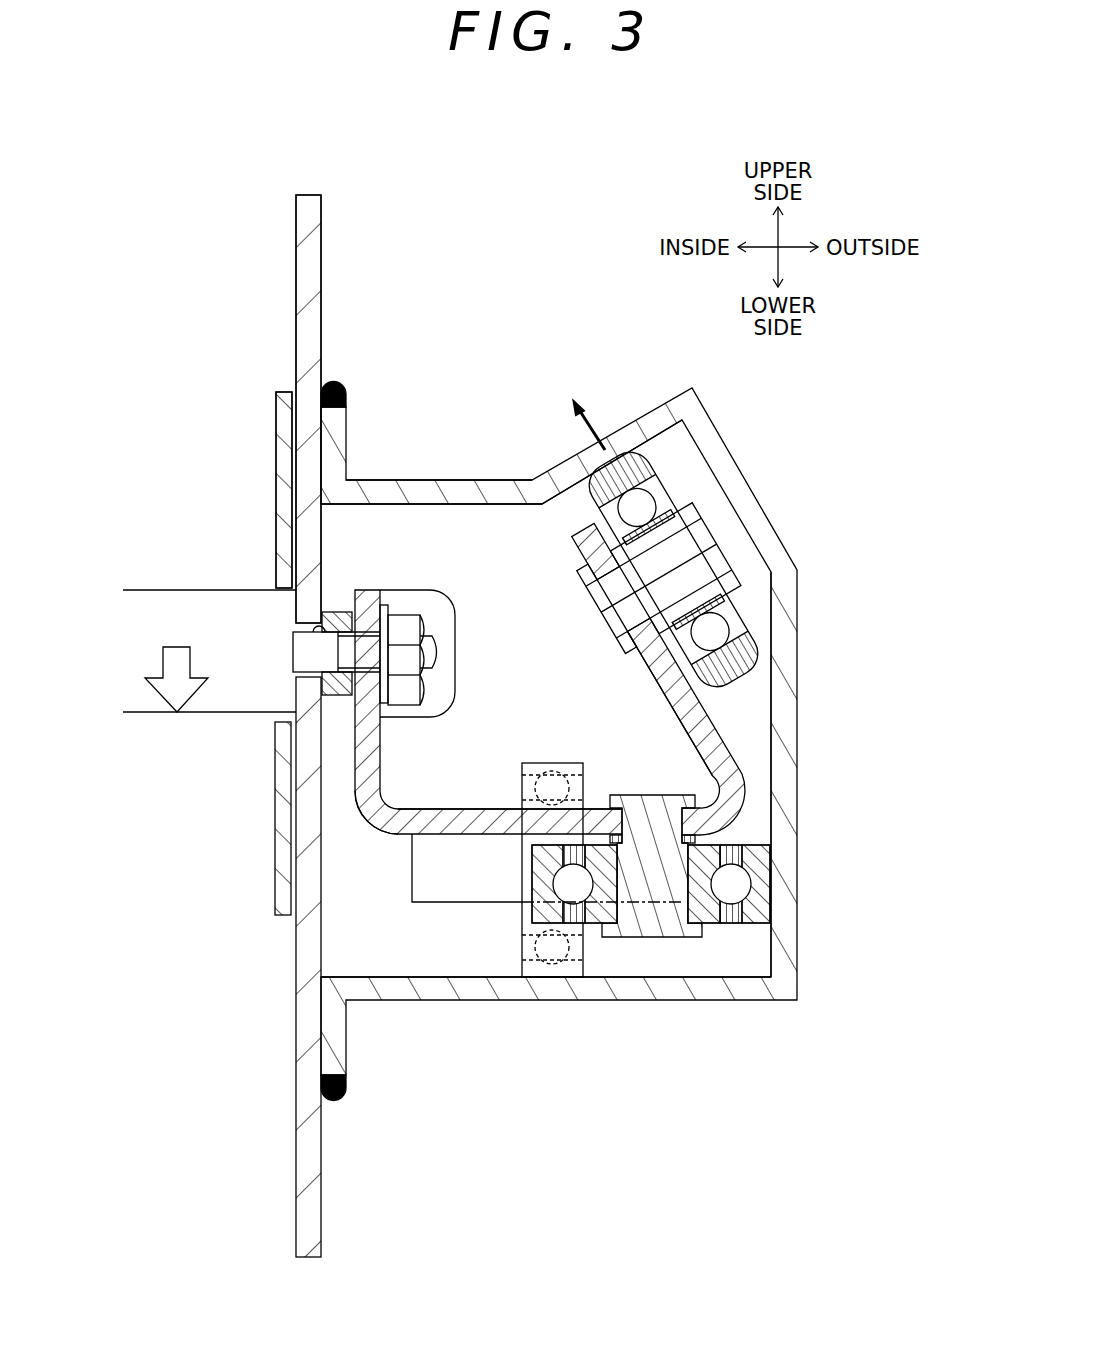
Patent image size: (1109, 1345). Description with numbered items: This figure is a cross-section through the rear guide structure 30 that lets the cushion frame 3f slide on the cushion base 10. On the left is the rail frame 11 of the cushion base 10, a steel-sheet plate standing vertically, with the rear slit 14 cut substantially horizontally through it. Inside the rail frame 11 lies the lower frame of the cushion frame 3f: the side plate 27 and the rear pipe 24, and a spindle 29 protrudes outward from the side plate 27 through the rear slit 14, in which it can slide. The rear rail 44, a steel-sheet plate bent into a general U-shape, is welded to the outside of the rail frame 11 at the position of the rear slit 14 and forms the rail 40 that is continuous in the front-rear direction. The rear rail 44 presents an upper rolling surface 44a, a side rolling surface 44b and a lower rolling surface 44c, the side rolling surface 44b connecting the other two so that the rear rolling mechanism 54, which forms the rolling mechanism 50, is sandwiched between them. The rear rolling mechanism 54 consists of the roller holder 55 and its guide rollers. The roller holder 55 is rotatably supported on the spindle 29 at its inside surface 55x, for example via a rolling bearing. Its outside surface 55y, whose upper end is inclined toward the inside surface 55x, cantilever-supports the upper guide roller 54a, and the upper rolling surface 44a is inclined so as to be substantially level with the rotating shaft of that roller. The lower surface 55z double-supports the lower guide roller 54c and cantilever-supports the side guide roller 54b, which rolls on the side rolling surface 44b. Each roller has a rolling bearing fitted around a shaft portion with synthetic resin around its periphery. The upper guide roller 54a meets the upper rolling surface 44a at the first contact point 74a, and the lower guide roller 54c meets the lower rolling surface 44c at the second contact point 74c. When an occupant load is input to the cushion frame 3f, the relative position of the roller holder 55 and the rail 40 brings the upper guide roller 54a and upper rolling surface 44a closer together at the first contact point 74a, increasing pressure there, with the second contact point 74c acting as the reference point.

The cushion frame 3f is at (289, 391).
The cushion base 10 is at (372, 409).
The rail frame 11 is at (323, 257).
The rear slit 14 is at (326, 626).
The rear pipe 24 is at (178, 588).
The side plate 27 is at (281, 455).
The spindle 29 is at (313, 652).
The guide structure 30 is at (431, 450).
The rail 40 is at (439, 438).
The rear rail 44 is at (433, 478).
The upper rolling surface 44a is at (633, 450).
The side rolling surface 44b is at (775, 908).
The lower rolling surface 44c is at (565, 976).
The rolling mechanism 50 is at (404, 870).
The rear rolling mechanism 54 is at (380, 830).
The upper guide roller 54a is at (647, 477).
The side guide roller 54b is at (762, 862).
The lower guide roller 54c is at (540, 972).
The roller holder 55 is at (712, 742).
The inside surface 55x is at (368, 592).
The outside surface 55y is at (700, 715).
The lower surface 55z is at (458, 818).
The first contact point 74a is at (632, 394).
The second contact point 74c is at (602, 1022).